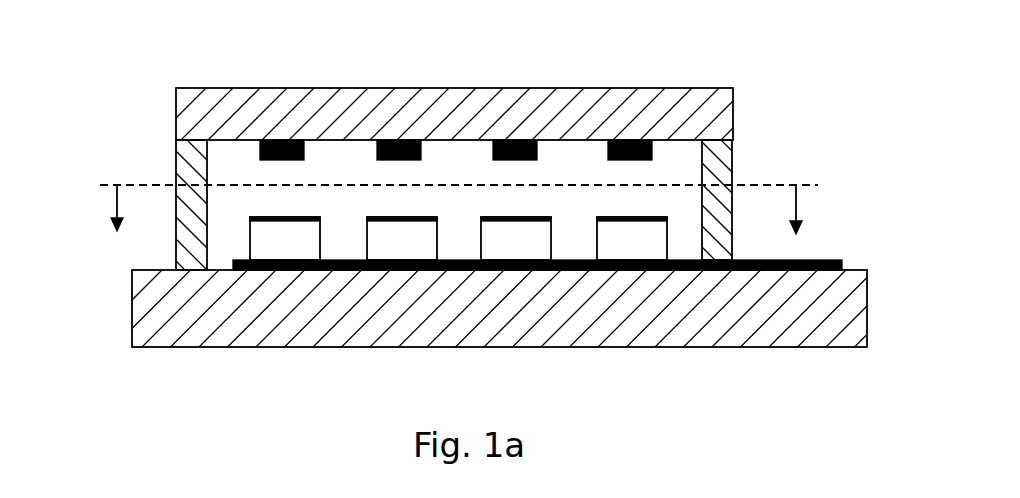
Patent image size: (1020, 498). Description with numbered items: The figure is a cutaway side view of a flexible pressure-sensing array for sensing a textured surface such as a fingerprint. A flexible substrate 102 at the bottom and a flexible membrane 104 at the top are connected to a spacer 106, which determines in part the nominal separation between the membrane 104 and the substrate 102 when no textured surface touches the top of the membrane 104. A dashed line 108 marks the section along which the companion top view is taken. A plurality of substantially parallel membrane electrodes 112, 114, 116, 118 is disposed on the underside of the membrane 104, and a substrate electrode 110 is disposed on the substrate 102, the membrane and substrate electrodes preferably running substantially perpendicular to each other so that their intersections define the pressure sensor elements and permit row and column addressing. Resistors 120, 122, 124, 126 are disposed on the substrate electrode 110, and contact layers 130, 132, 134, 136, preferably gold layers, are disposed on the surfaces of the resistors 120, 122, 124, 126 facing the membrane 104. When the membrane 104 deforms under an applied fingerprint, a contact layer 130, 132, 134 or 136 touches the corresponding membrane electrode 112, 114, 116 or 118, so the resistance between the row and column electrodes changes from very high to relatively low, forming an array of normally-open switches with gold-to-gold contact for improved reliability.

The flexible substrate 102 is at (150, 317).
The flexible membrane 104 is at (190, 104).
The spacer 106 is at (185, 163).
The line 108 is at (803, 186).
The substrate electrode 110 is at (815, 262).
The membrane electrode 112 is at (282, 140).
The membrane electrode 114 is at (395, 140).
The membrane electrode 116 is at (495, 140).
The membrane electrode 118 is at (615, 140).
The resistor 120 is at (272, 243).
The resistor 122 is at (398, 243).
The resistor 124 is at (515, 243).
The resistor 126 is at (632, 243).
The contact layer 130 is at (310, 217).
The contact layer 132 is at (427, 217).
The contact layer 134 is at (542, 217).
The contact layer 136 is at (652, 217).